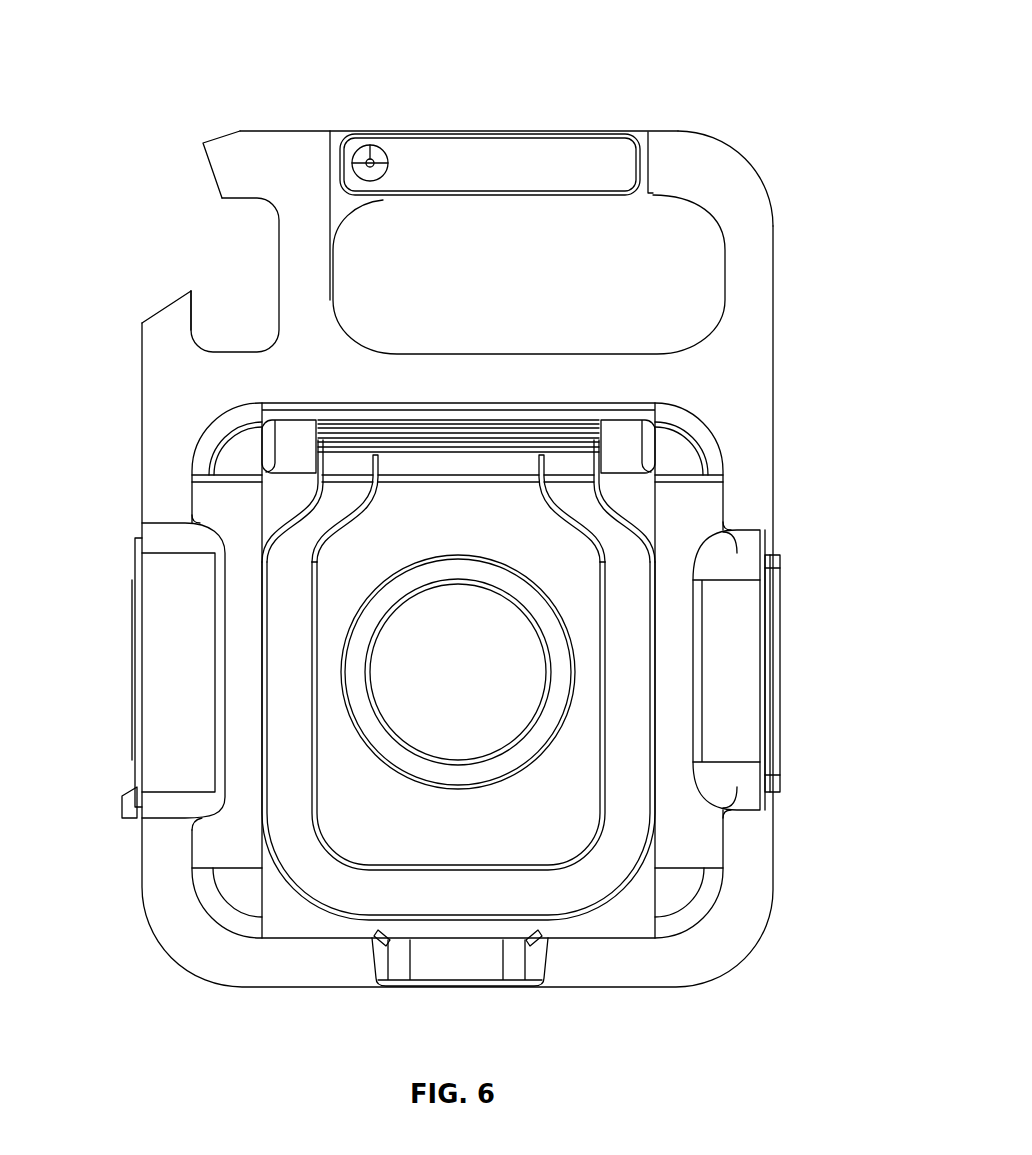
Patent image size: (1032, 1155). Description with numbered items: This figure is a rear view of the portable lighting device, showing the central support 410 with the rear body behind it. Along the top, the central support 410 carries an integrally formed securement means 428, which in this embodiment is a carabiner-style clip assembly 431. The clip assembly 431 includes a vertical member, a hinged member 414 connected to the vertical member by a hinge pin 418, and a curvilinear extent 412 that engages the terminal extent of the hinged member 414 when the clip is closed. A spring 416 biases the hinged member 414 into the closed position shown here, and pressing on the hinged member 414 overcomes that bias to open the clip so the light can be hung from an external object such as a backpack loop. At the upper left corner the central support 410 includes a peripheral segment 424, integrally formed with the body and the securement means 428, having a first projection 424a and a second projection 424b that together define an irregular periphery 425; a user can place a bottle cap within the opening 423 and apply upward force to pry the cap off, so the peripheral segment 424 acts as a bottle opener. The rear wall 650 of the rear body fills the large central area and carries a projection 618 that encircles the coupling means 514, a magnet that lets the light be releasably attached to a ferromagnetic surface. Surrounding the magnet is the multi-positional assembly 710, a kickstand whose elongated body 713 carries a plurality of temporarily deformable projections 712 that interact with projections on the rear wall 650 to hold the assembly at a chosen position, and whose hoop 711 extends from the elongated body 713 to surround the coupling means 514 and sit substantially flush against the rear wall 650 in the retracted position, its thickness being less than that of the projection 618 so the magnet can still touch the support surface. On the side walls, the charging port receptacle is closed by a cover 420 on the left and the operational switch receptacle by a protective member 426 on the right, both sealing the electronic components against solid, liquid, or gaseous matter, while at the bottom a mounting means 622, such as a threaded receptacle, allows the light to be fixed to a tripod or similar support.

The central support 410 is at (172, 882).
The curvilinear extent 412 is at (670, 157).
The hinged member 414 is at (548, 148).
The spring 416 is at (455, 135).
The hinge pin 418 is at (368, 146).
The cover 420 is at (135, 667).
The opening 423 is at (171, 227).
The peripheral segment 424 is at (163, 193).
The first projection 424a is at (243, 146).
The second projection 424b is at (165, 322).
The irregular periphery 425 is at (191, 316).
The protective member 426 is at (782, 643).
The securement means 428 is at (526, 103).
The clip assembly 431 is at (585, 36).
The coupling means 514 is at (497, 702).
The projection 618 is at (557, 672).
The mounting means 622 is at (513, 968).
The rear wall 650 is at (357, 830).
The multi-positional assembly 710 is at (583, 670).
The hoop 711 is at (612, 542).
The plurality of projections 712 is at (477, 420).
The elongated body 713 is at (535, 433).